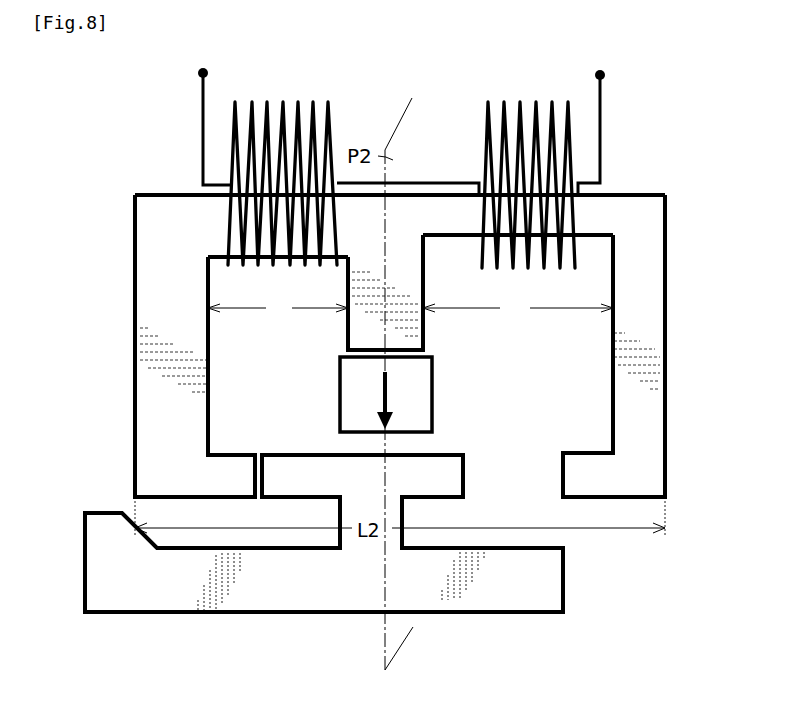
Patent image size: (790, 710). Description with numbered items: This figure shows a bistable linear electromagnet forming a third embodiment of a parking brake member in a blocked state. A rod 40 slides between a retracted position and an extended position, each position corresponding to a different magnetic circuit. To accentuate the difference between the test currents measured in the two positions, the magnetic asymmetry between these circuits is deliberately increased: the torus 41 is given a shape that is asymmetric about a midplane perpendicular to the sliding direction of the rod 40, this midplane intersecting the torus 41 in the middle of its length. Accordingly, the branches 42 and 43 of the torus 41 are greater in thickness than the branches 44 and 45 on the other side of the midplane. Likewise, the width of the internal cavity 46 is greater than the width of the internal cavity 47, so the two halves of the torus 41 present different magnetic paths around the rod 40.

The rod 40 is at (303, 598).
The torus 41 is at (168, 309).
The branch 42 is at (165, 363).
The branch 43 is at (237, 231).
The branch 44 is at (647, 305).
The branch 45 is at (593, 214).
The internal cavity 46 is at (558, 347).
The internal cavity 47 is at (262, 366).